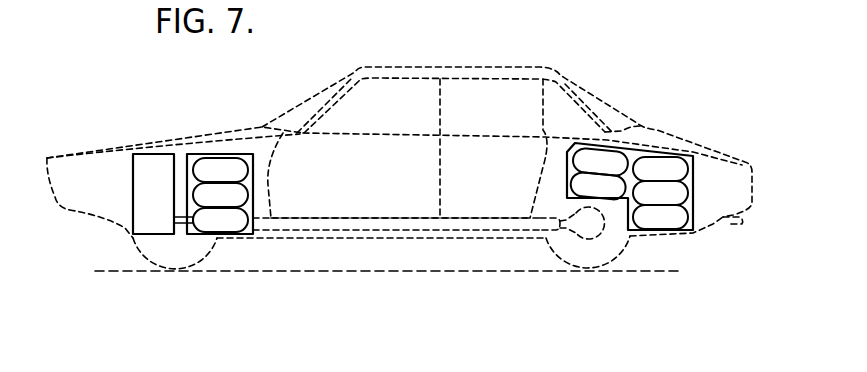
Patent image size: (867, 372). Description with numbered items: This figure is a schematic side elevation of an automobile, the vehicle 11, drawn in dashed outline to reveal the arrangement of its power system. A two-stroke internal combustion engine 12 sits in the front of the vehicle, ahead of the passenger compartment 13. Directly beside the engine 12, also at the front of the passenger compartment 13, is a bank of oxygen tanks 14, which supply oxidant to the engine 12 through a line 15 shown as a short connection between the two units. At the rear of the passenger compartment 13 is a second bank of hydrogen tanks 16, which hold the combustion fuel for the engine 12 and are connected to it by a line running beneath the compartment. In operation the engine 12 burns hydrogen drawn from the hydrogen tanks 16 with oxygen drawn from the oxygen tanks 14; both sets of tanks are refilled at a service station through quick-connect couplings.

The vehicle 11 is at (577, 76).
The two-stroke internal combustion engine 12 is at (153, 162).
The passenger compartment 13 is at (383, 187).
The oxygen tanks 14 is at (215, 165).
The line 15 is at (183, 226).
The hydrogen tanks 16 is at (667, 163).